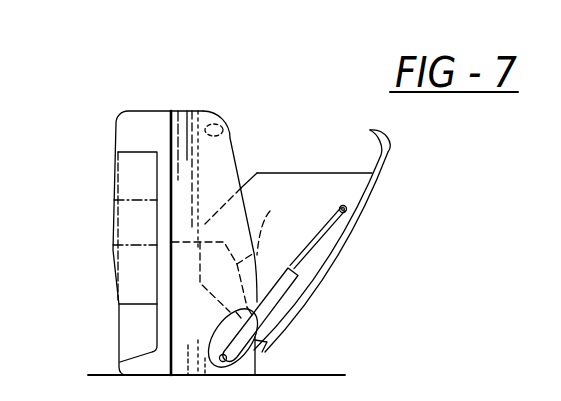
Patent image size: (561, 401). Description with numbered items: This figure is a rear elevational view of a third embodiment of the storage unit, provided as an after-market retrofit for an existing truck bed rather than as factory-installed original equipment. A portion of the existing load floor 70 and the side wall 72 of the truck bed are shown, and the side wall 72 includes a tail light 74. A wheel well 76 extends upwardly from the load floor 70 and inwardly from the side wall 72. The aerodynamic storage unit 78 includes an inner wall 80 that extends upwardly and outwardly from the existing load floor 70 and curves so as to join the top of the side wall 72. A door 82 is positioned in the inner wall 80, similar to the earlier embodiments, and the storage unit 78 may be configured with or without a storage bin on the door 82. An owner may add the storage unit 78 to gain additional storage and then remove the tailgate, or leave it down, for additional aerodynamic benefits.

The load floor 70 is at (322, 375).
The side wall 72 is at (127, 133).
The tail light 74 is at (130, 268).
The wheel well 76 is at (270, 211).
The aerodynamic storage unit 78 is at (247, 122).
The inner wall 80 is at (238, 157).
The door 82 is at (363, 202).